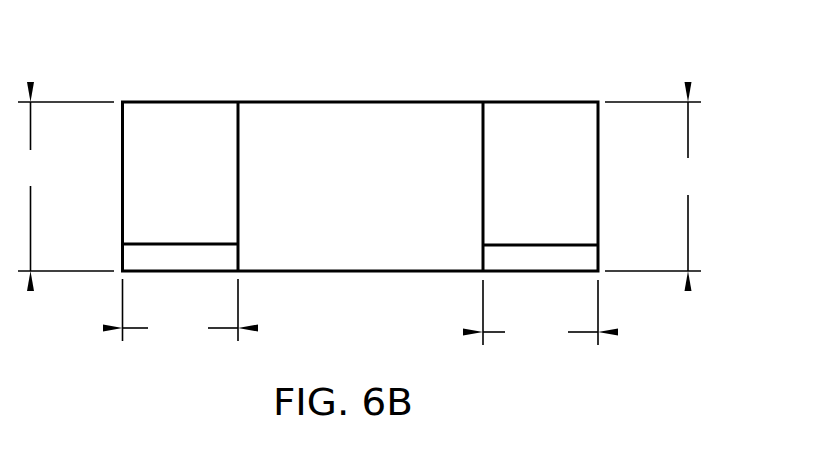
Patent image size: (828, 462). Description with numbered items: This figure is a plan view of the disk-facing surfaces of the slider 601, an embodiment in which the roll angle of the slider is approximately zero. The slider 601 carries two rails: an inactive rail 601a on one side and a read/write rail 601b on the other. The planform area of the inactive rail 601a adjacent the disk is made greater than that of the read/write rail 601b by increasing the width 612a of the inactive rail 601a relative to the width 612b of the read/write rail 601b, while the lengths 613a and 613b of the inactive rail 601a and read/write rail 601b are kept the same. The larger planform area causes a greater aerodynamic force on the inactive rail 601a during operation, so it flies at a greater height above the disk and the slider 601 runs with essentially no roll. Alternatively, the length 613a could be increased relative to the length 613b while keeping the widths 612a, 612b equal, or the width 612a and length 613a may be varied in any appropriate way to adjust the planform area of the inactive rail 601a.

The slider 601 is at (427, 102).
The inactive rail 601a is at (135, 226).
The read/write rail 601b is at (583, 229).
The width of the inactive rail 612a is at (181, 310).
The width of the read/write rail 612b is at (540, 312).
The length of the inactive rail 613a is at (60, 186).
The length of the read/write rail 613b is at (661, 186).